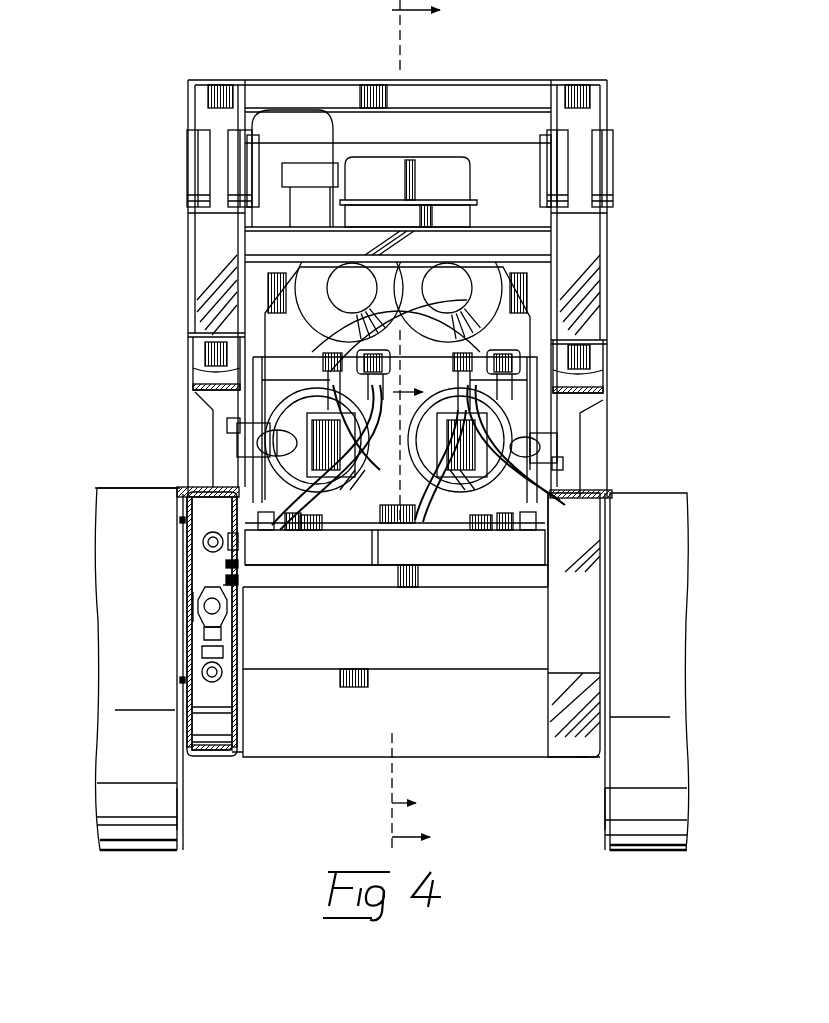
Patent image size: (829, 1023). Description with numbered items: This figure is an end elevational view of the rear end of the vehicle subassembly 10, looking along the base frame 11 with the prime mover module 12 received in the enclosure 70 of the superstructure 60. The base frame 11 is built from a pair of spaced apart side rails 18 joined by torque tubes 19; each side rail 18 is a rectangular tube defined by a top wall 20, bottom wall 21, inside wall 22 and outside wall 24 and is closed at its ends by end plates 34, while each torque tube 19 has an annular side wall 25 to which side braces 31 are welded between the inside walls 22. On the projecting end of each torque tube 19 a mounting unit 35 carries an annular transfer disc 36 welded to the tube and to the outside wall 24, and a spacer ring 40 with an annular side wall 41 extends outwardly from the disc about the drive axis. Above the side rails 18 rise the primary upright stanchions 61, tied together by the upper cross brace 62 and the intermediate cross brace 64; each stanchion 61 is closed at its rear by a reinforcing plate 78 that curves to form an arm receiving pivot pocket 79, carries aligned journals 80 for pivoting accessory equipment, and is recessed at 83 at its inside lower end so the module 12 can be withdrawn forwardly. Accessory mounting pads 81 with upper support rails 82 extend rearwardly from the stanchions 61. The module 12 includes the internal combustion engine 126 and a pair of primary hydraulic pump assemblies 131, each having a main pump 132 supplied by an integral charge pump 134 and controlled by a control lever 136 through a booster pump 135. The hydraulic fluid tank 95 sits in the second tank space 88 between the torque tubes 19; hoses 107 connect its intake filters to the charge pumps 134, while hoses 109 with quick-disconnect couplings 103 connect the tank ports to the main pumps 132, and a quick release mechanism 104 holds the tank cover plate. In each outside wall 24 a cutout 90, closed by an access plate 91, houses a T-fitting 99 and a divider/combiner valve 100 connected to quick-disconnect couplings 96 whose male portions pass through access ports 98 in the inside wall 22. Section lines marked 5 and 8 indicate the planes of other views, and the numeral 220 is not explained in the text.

The section line 5- 5 is at (430, 426).
The section line 8- 8 is at (414, 567).
The vehicle subassembly 10 is at (107, 263).
The base frame 11 is at (165, 485).
The prime mover module 12 is at (540, 312).
The side rails 18 is at (236, 757).
The torque tubes 19 is at (532, 617).
The top wall 20 is at (215, 490).
The bottom wall 21 is at (218, 755).
The inside wall 22 is at (238, 728).
The outside wall 24 is at (188, 740).
The annular side wall 25 is at (395, 628).
The side braces 31 is at (421, 713).
The end plates 34 is at (574, 625).
The mounting unit 35 is at (183, 832).
The transfer disc 36 is at (180, 803).
The spacer ring 40 is at (122, 835).
The annular side wall 41 is at (391, 669).
The superstructure 60 is at (610, 83).
The primary upright stanchions 61 is at (208, 93).
The upper cross brace 62 is at (510, 74).
The intermediate cross brace 64 is at (398, 244).
The enclosure 70 is at (508, 132).
The reinforcing plate 78 is at (208, 249).
The arm receiving pivot pocket 79 is at (208, 215).
The journals 80 is at (232, 143).
The accessory mounting pads 81 is at (188, 336).
The upper support rail 82 is at (197, 378).
The recess 83 is at (213, 412).
The second tank space 88 is at (519, 580).
The cutout 90 is at (187, 670).
The access plate 91 is at (183, 642).
The hydraulic fluid tank 95 is at (351, 580).
The quick-disconnect couplings 96 is at (226, 566).
The access port 98 is at (237, 570).
The T-fitting 99 is at (203, 540).
The divider/combiner valve 100 is at (201, 596).
The quick-disconnect couplings 103 is at (333, 354).
The quick release mechanism 104 is at (386, 530).
The hoses 107 is at (420, 502).
The hoses 109 is at (268, 530).
The internal combustion engine 126 is at (474, 222).
The primary hydraulic pump assemblies 131 is at (405, 340).
The main pump 132 is at (312, 378).
The charge pump 134 is at (312, 433).
The booster pump 135 is at (240, 450).
The control lever 136 is at (253, 388).
The fitting 220 is at (232, 425).